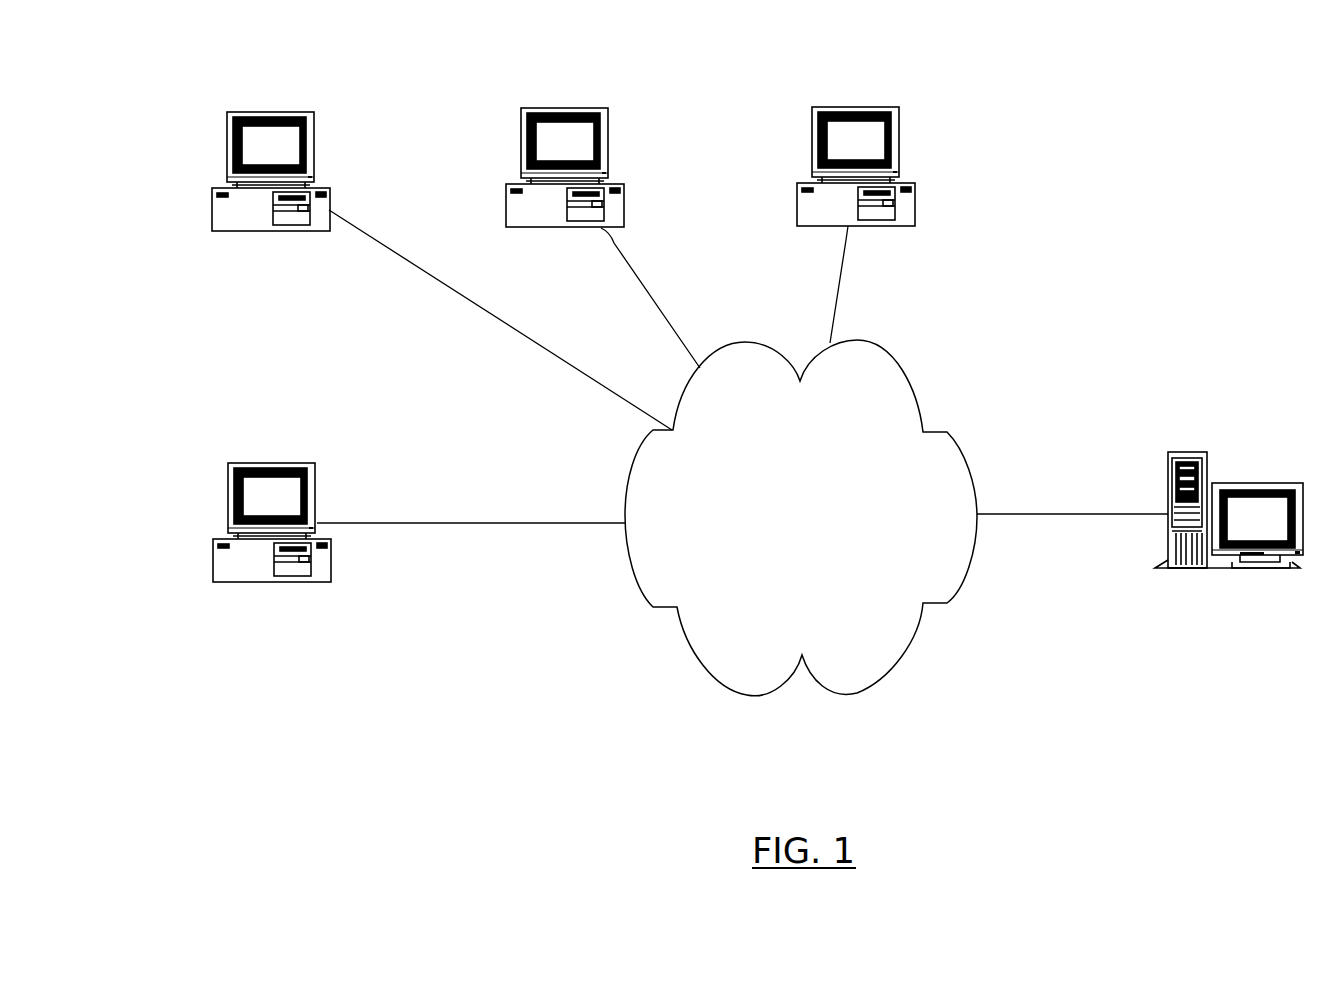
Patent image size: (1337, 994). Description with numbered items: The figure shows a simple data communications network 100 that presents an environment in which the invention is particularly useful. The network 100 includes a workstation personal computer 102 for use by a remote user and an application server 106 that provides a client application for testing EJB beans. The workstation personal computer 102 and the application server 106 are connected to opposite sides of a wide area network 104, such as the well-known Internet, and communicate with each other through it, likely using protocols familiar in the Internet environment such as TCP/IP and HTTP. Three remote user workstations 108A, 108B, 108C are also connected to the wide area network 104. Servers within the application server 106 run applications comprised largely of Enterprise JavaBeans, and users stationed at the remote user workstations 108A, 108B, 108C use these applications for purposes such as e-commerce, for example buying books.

The network 100 is at (1158, 226).
The workstation personal computer 102 is at (272, 463).
The wide area network 104 is at (903, 548).
The application server 106 is at (1185, 453).
The remote user workstation 108A is at (270, 112).
The remote user workstation 108B is at (564, 108).
The remote user workstation 108C is at (855, 107).